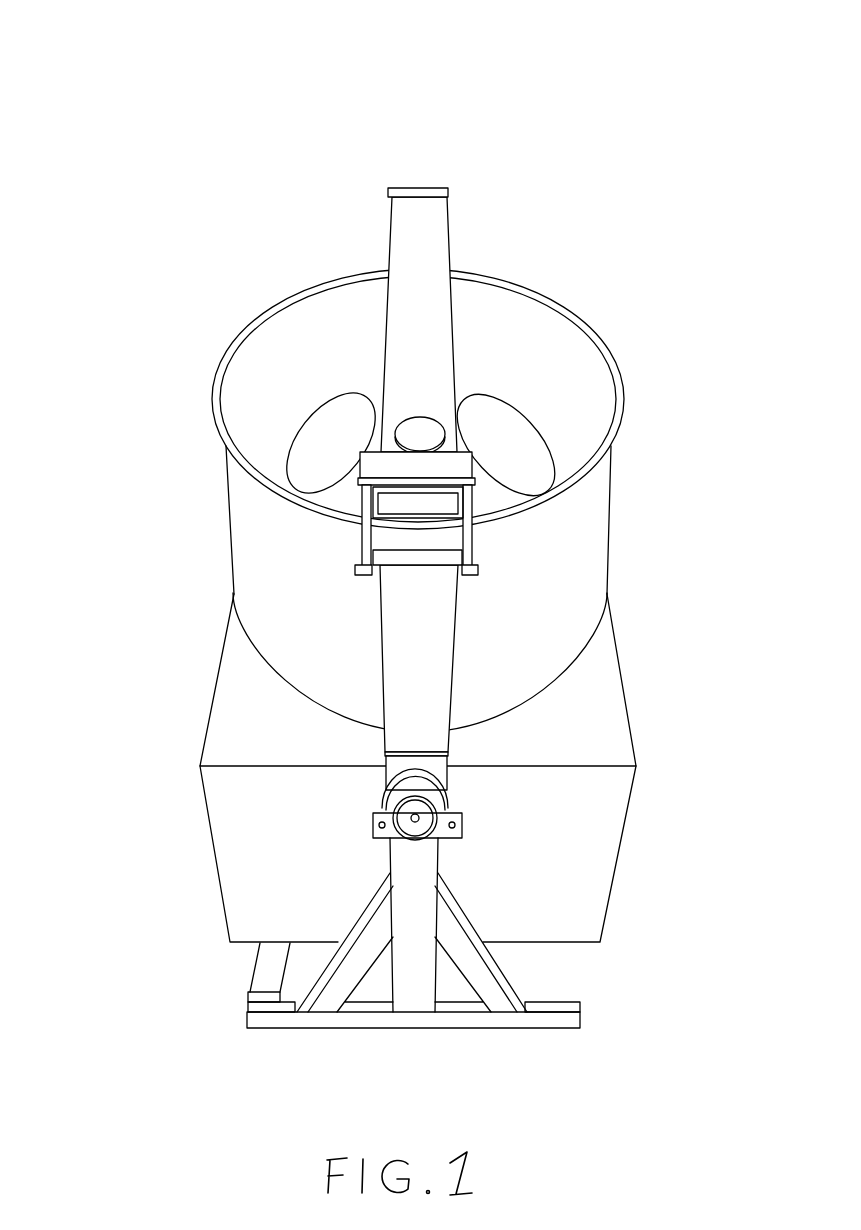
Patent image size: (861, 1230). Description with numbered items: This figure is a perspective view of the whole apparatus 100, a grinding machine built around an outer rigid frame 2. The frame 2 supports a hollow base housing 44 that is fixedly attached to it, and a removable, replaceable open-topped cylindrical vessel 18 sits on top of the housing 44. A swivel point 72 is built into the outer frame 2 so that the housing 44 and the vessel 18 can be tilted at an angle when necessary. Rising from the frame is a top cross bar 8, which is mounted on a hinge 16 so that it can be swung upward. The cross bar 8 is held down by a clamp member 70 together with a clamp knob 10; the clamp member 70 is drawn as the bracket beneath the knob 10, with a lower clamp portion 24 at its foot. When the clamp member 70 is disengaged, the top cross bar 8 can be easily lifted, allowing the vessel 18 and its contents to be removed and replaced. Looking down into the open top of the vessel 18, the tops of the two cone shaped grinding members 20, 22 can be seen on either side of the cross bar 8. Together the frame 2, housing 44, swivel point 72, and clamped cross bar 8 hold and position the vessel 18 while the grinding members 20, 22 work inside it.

The mixing apparatus 100 is at (652, 177).
The outer rigid frame 2 is at (422, 650).
The top cross bar 8 is at (422, 245).
The hinge 16 is at (452, 193).
The clamp knob 10 is at (413, 435).
The vessel 18 is at (243, 528).
The cone shaped grinding member 20 is at (317, 457).
The cone shaped grinding member 22 is at (503, 433).
The clamp member 70 is at (475, 543).
The bracket clamp 24 is at (478, 566).
The swivel point 72 is at (425, 813).
The base housing 44 is at (628, 900).